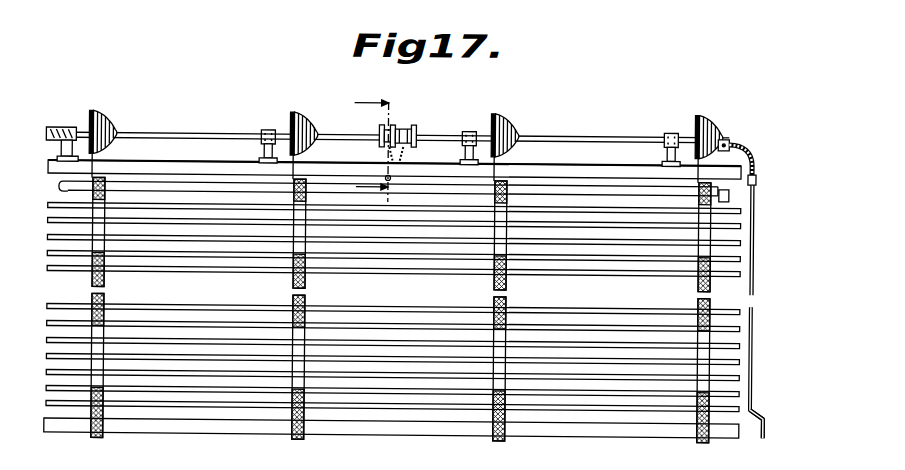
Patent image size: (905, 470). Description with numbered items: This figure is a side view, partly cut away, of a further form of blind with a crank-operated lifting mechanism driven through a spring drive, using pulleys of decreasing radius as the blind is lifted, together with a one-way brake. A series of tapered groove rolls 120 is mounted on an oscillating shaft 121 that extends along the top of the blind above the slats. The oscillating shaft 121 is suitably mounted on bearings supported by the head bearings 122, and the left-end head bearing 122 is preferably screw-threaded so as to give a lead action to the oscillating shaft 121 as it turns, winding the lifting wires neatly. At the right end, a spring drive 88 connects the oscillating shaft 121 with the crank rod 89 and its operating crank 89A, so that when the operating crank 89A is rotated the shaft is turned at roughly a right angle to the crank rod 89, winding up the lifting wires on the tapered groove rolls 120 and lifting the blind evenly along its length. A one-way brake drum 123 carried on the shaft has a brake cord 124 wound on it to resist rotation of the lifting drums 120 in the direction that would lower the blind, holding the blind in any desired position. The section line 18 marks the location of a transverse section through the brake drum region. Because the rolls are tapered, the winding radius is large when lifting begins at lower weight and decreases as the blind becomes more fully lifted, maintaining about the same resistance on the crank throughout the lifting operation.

The tapered groove rolls 120 is at (99, 121).
The oscillating shaft 121 is at (194, 129).
The head bearings 122 is at (50, 126).
The one-way brake drum 123 is at (406, 124).
The brake cord 124 is at (393, 121).
The spring drive 88 is at (752, 146).
The crank rod 89 is at (753, 337).
The operating crank 89A is at (766, 418).
The section line 18- 18 is at (361, 139).